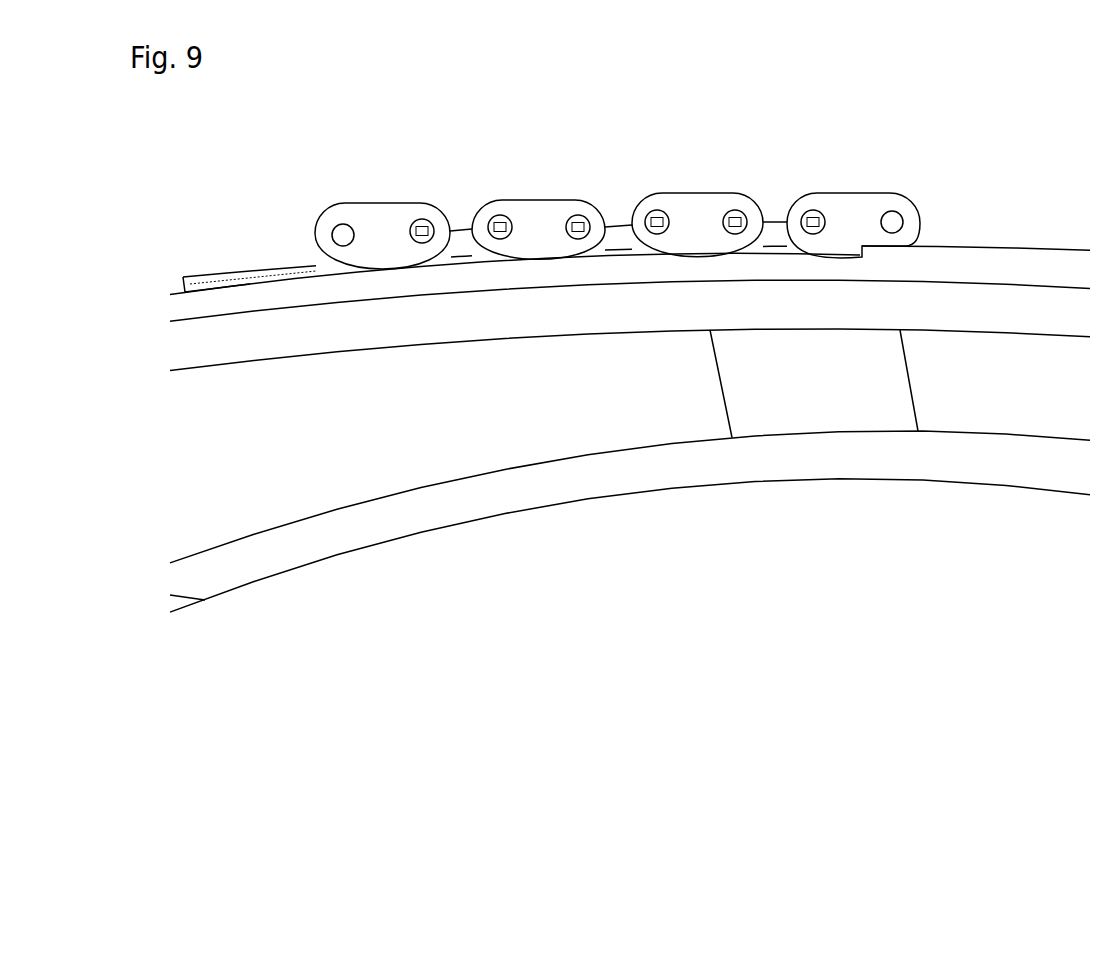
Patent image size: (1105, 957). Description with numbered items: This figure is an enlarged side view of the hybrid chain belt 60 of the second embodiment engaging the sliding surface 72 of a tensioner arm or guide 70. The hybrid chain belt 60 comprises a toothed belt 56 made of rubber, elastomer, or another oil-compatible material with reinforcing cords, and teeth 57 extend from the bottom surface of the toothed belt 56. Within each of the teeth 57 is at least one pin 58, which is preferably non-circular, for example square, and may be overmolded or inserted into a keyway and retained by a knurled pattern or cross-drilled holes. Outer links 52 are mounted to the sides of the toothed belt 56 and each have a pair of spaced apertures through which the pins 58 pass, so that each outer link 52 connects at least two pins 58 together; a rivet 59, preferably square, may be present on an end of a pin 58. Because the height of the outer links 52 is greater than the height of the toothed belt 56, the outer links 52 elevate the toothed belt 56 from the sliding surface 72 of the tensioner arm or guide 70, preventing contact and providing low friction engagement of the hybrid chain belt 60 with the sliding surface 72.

The outer link 52 is at (706, 170).
The toothed belt 56 is at (613, 238).
The teeth 57 is at (800, 193).
The pin 58 is at (496, 224).
The rivet 59 is at (733, 220).
The hybrid chain belt 60 is at (614, 162).
The tensioner arm or guide 70 is at (950, 412).
The sliding surface 72 is at (230, 284).